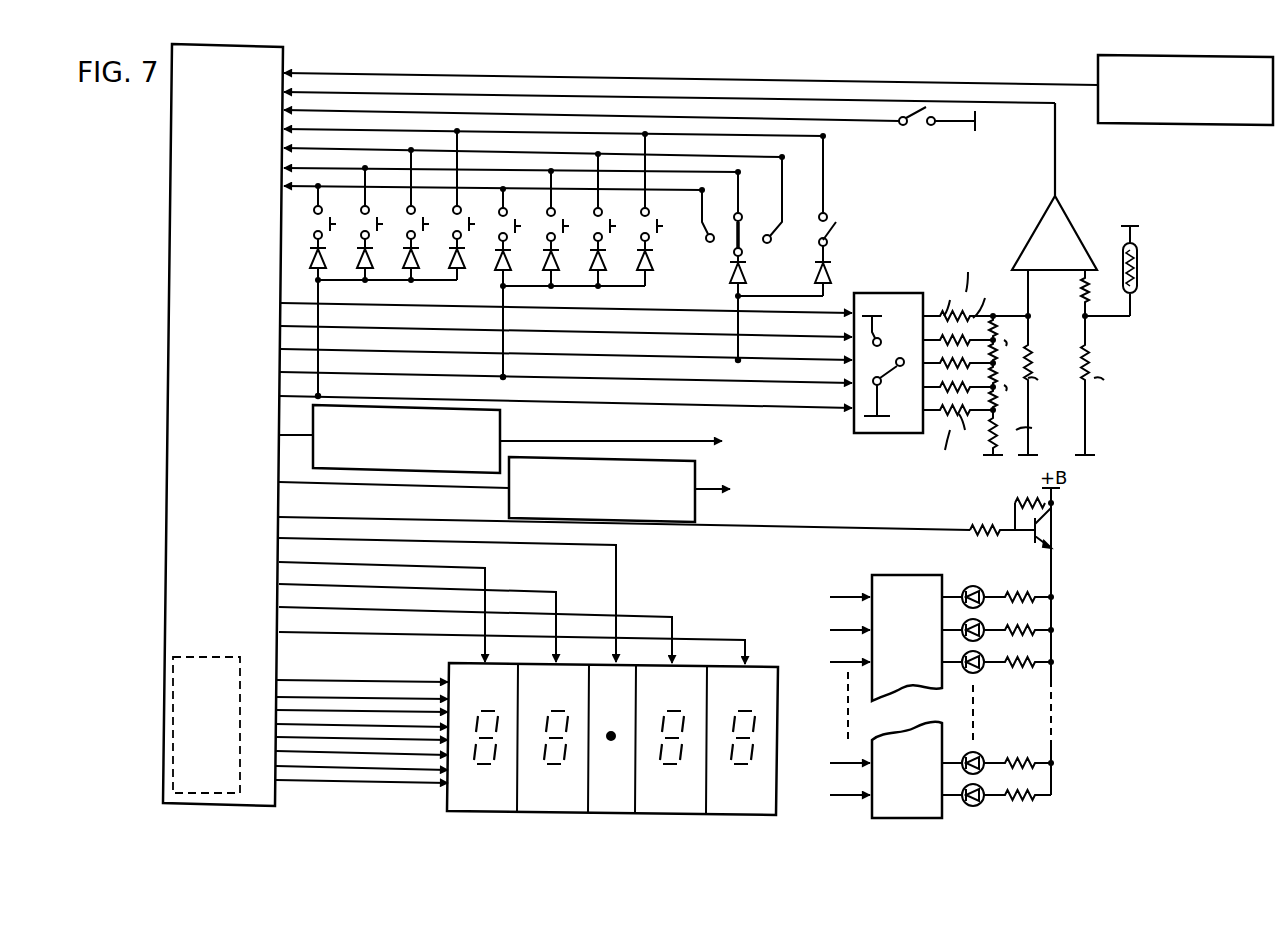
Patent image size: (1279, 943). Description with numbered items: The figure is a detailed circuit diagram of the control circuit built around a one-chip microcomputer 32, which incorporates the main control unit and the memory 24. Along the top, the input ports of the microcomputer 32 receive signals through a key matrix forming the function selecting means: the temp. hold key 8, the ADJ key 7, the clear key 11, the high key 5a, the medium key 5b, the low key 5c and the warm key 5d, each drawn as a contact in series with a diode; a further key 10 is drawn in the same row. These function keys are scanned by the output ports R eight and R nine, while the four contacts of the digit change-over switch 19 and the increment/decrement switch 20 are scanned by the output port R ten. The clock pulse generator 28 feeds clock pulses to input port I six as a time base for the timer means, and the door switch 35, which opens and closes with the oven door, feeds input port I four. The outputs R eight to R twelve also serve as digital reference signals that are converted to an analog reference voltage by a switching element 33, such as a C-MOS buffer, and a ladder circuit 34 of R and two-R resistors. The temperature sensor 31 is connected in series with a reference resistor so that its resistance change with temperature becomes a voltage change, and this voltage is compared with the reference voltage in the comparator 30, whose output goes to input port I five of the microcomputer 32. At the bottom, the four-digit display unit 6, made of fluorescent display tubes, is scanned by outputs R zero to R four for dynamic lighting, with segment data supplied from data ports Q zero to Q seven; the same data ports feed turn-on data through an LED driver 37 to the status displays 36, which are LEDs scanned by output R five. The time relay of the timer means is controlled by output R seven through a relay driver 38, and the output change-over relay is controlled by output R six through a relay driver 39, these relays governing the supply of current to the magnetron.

The one-chip microcomputer 32 is at (286, 50).
The clock pulse generator 28 is at (1168, 125).
The door switch 35 is at (908, 133).
The comparator 30 is at (1032, 228).
The temperature sensor 31 is at (1139, 277).
The switching element 33 is at (893, 290).
The ladder circuit 34 is at (914, 432).
The relay driver 38 is at (500, 414).
The relay driver 39 is at (695, 470).
The LED driver 37 is at (900, 575).
The status displays 36 is at (985, 802).
The memory 24 is at (175, 762).
The four-digit display unit 6 is at (448, 668).
The temp. hold key 8 is at (327, 249).
The ADJ key 7 is at (374, 249).
The start switch 10 is at (420, 249).
The clear key 11 is at (466, 249).
The high key 5a is at (512, 251).
The medium key 5b is at (560, 251).
The low key 5c is at (607, 251).
The warm key 5d is at (654, 251).
The digit change-over switch 19 is at (722, 269).
The increment/decrement switch 20 is at (812, 256).